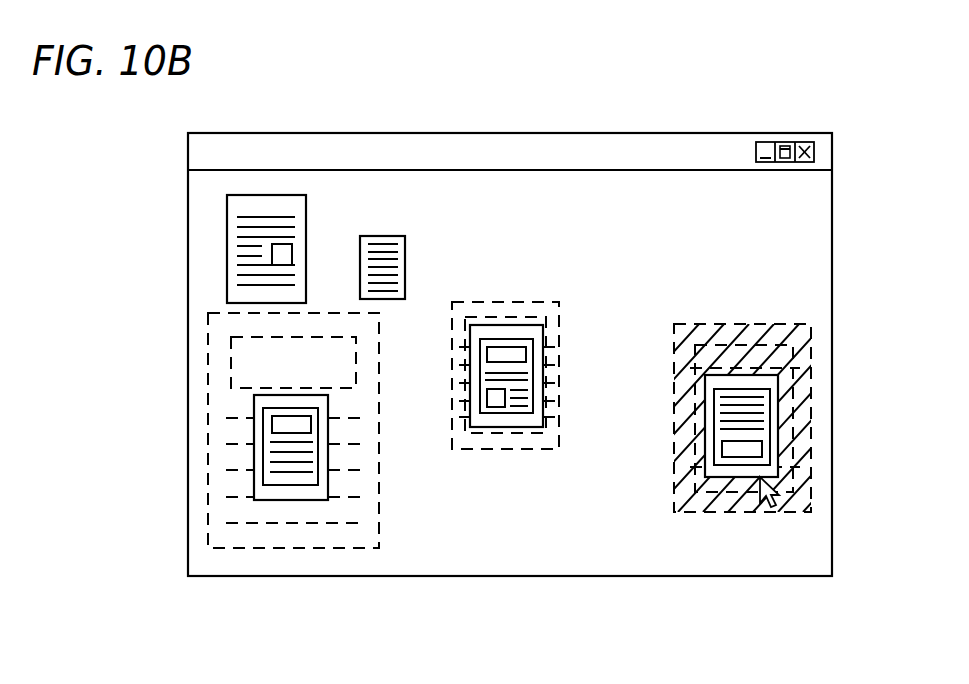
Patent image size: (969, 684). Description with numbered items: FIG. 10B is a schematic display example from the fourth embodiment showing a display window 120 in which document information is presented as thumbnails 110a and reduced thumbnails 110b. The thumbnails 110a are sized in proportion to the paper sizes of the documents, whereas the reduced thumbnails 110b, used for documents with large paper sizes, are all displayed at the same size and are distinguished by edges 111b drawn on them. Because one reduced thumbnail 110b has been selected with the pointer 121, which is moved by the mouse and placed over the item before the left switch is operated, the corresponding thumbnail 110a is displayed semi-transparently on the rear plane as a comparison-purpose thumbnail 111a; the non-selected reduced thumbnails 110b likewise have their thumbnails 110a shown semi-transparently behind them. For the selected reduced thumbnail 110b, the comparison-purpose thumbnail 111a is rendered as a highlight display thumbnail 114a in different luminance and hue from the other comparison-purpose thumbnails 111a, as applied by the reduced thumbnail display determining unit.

The display window 120 is at (832, 222).
The thumbnail 110a is at (267, 195).
The reduced thumbnail 110b is at (254, 430).
The comparison-purpose thumbnail 111a is at (302, 535).
The edge 111b is at (263, 463).
The highlight display thumbnail 114a is at (702, 513).
The pointer 121 is at (785, 500).